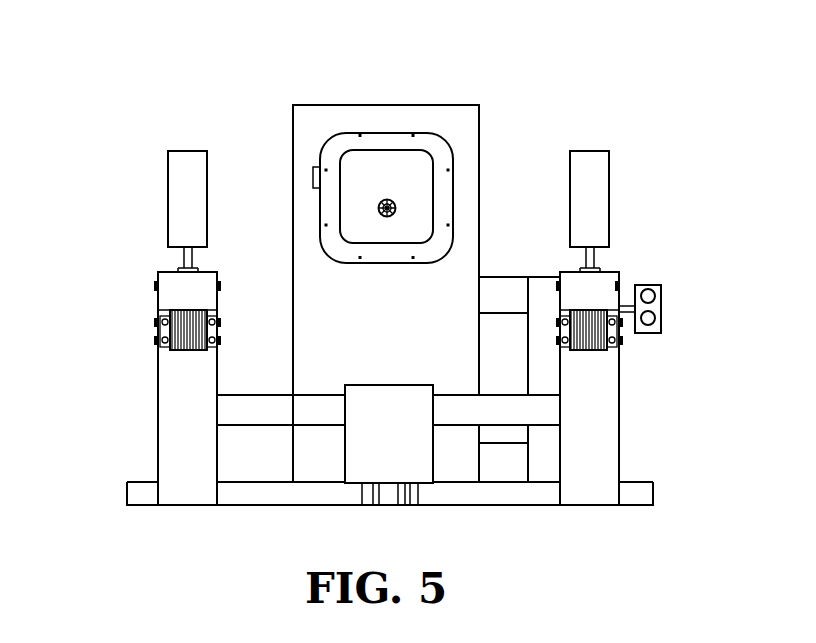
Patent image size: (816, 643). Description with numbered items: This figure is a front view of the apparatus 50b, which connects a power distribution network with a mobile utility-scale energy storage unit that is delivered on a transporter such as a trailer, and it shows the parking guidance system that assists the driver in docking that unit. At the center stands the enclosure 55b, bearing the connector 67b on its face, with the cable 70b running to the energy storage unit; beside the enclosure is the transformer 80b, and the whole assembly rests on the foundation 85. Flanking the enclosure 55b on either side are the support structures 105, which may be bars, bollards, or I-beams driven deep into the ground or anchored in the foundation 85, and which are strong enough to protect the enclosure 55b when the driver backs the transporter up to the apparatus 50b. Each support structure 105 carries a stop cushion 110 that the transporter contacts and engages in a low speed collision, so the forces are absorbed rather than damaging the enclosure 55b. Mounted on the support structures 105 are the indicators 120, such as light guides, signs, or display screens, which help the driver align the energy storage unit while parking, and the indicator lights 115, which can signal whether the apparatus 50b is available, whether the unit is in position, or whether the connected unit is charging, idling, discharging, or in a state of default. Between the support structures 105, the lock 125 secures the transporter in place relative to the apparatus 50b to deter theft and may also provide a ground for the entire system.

The apparatus 50b is at (114, 74).
The enclosure 55b is at (292, 130).
The connector 67b is at (385, 133).
The cable 70b is at (394, 206).
The transformer 80b is at (512, 277).
The foundation 85 is at (640, 482).
The support structure 105 is at (158, 277).
The stop cushion 110 is at (185, 345).
The indicator lights 115 is at (661, 306).
The indicators 120 is at (166, 203).
The lock 125 is at (420, 443).